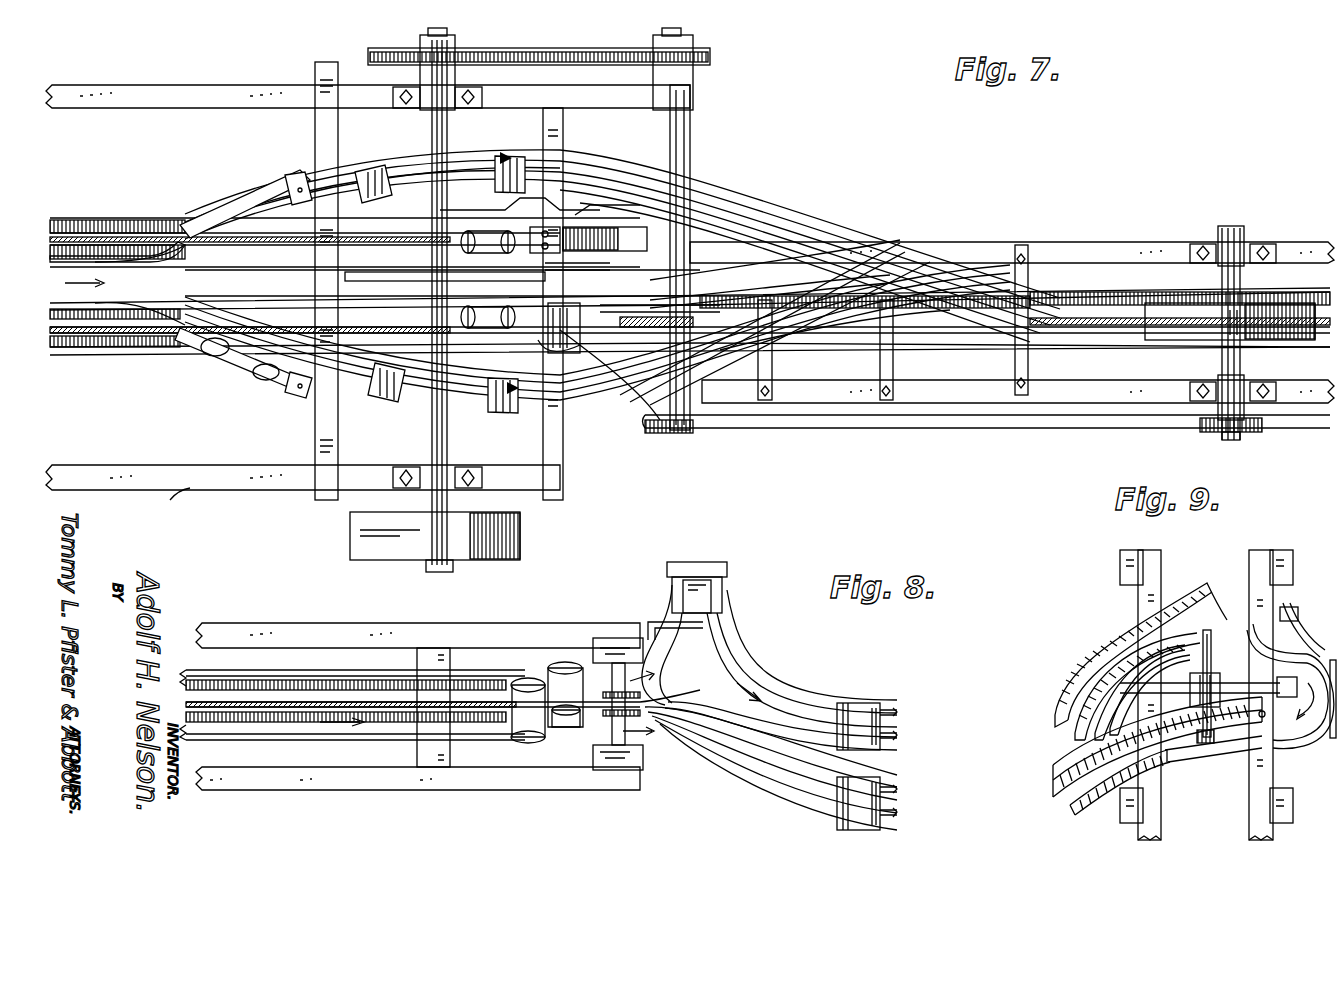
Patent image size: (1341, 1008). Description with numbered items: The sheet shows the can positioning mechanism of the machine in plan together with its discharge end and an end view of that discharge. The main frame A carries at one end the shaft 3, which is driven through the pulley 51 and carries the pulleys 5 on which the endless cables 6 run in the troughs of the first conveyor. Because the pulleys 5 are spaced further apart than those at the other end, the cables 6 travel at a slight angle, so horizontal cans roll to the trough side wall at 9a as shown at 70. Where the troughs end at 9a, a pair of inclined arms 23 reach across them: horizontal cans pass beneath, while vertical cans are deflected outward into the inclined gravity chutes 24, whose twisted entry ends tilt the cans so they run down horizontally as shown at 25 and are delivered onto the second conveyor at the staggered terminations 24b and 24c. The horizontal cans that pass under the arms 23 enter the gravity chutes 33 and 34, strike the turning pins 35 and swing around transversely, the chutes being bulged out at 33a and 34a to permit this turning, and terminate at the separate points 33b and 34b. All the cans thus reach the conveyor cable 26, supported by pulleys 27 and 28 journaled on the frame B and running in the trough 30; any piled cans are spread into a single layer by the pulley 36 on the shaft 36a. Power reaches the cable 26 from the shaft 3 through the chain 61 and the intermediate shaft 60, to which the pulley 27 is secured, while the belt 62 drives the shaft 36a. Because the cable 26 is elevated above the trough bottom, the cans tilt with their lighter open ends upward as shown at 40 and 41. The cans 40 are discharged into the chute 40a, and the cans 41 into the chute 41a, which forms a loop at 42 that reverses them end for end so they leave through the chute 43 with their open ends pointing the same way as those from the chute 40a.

In FIG. 7, the frame B is at (962, 240).
In FIG. 8, the frame B is at (350, 628).
In FIG. 9, the frame B is at (1278, 560).
In FIG. 7, the shaft 3 is at (440, 437).
In FIG. 7, the pulleys 5 is at (435, 312).
In FIG. 7, the endless cables 6 is at (115, 245).
In FIG. 7, the trough end / side wall 9a is at (135, 228).
In FIG. 7, the inclined arms 23 is at (215, 250).
In FIG. 7, the inclined gravity chutes 24 is at (378, 175).
In FIG. 7, the chute termination 24b is at (1050, 300).
In FIG. 7, the chute termination 24c is at (935, 290).
In FIG. 7, the cans in horizontal position 25 is at (360, 175).
In FIG. 7, the conveyor cable 26 is at (1095, 318).
In FIG. 8, the conveyor cable 26 is at (297, 710).
In FIG. 7, the pulley 27 is at (648, 345).
In FIG. 8, the pulley 28 is at (700, 690).
In FIG. 9, the pulley 28 is at (1205, 660).
In FIG. 7, the trough or chute 30 is at (1125, 290).
In FIG. 8, the trough or chute 30 is at (500, 672).
In FIG. 7, the gravity chute 33 is at (580, 258).
In FIG. 7, the bulged portion 33a is at (575, 200).
In FIG. 7, the chute termination 33b is at (800, 300).
In FIG. 7, the gravity chute 34 is at (680, 300).
In FIG. 7, the bulged portion 34a is at (590, 350).
In FIG. 7, the chute termination 34b is at (700, 310).
In FIG. 7, the turning pins 35 is at (545, 305).
In FIG. 7, the pulley 36 is at (1275, 300).
In FIG. 7, the shaft 36a is at (1230, 230).
In FIG. 8, the cans 40 is at (528, 740).
In FIG. 8, the chute 40a is at (750, 810).
In FIG. 9, the chute 40a is at (1060, 678).
In FIG. 8, the cans 41 is at (565, 730).
In FIG. 8, the chute 41a is at (650, 620).
In FIG. 9, the chute 41a is at (1280, 660).
In FIG. 8, the loop 42 is at (705, 598).
In FIG. 9, the loop 42 is at (1318, 745).
In FIG. 8, the chute 43 is at (800, 680).
In FIG. 9, the chute 43 is at (1160, 758).
In FIG. 7, the pulley 51 is at (520, 535).
In FIG. 7, the intermediate shaft 60 is at (682, 108).
In FIG. 7, the chain 61 is at (560, 58).
In FIG. 7, the belt 62 is at (960, 395).
In FIG. 7, the cans rolled to trough side 70 is at (485, 308).
In FIG. 7, the main frame A is at (190, 478).